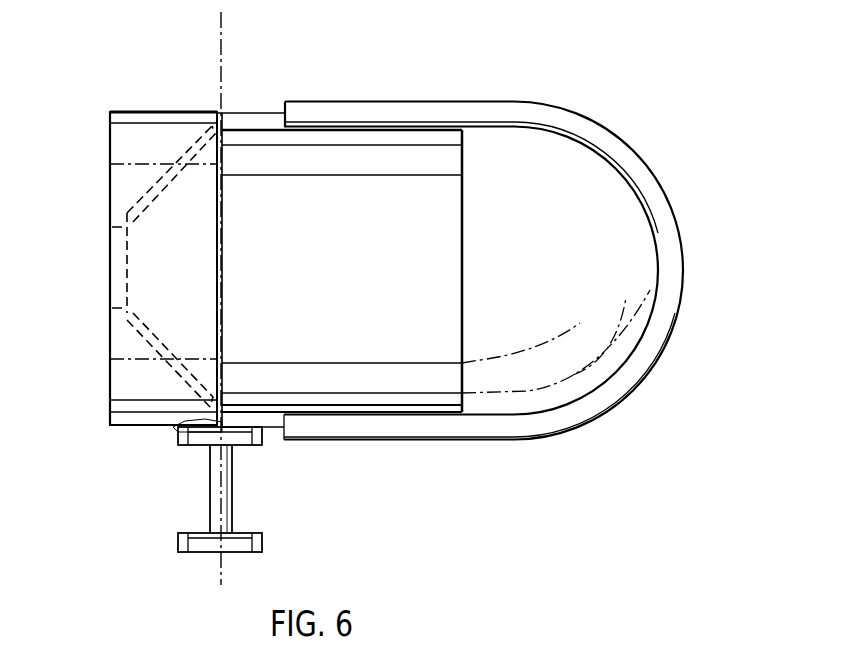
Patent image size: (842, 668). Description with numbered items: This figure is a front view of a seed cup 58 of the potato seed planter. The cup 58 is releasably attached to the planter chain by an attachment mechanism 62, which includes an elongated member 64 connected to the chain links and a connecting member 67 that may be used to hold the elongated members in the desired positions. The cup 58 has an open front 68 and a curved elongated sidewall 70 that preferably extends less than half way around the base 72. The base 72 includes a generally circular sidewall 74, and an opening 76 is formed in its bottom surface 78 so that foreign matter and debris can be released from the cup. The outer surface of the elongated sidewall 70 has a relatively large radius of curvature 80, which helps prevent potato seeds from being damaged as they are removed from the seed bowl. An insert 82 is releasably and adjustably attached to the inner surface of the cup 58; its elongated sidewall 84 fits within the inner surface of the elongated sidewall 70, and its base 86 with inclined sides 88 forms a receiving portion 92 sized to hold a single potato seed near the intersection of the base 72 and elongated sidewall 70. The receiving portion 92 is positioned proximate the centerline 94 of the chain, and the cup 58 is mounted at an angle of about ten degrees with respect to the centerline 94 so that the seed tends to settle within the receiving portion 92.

The cup 58 is at (643, 90).
The attachment mechanism 62 is at (167, 500).
The elongated member 64 is at (227, 487).
The connecting member 67 is at (250, 531).
The open front 68 is at (622, 264).
The elongated sidewall 70 is at (516, 140).
The base 72 is at (122, 386).
The generally circular sidewall 74 is at (152, 120).
The opening 76 is at (120, 263).
The bottom surface 78 is at (110, 187).
The radius of curvature 80 is at (651, 180).
The insert 82 is at (420, 142).
The elongated sidewall 84 is at (430, 378).
The base 86 is at (138, 333).
The inclined sides 88 is at (168, 167).
The receiving portion 92 is at (232, 308).
The centerline 94 is at (220, 568).